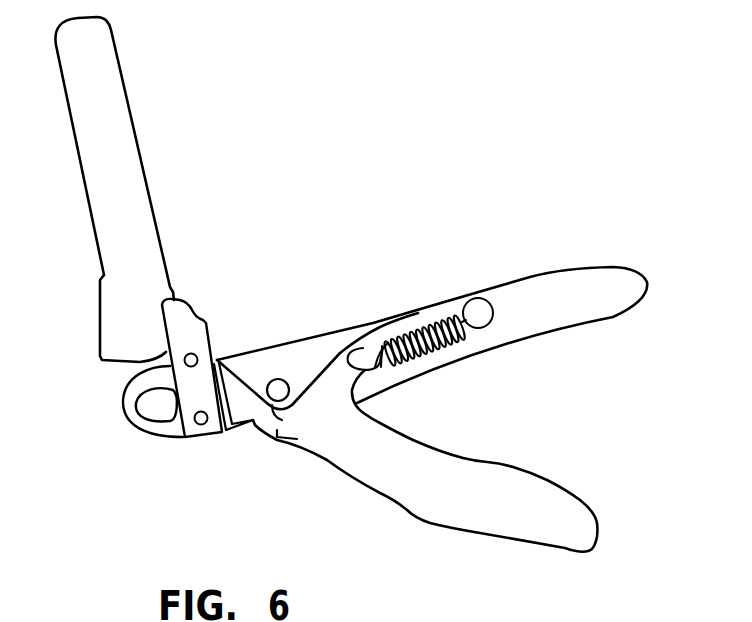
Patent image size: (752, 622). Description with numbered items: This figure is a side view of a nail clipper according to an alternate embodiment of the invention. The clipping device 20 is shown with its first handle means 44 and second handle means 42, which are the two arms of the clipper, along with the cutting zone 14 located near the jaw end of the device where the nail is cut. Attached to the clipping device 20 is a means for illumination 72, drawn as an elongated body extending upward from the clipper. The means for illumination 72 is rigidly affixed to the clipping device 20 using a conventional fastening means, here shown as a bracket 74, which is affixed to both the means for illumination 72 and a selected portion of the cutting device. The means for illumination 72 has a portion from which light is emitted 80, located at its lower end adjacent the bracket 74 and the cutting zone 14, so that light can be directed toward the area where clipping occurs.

The clipping device 20 is at (413, 183).
The cutting zone 14 is at (158, 408).
The second handle means 42 is at (597, 285).
The first handle means 44 is at (532, 490).
The means for illumination 72 is at (115, 153).
The bracket 74 is at (213, 403).
The portion from which light is emitted 80 is at (118, 364).